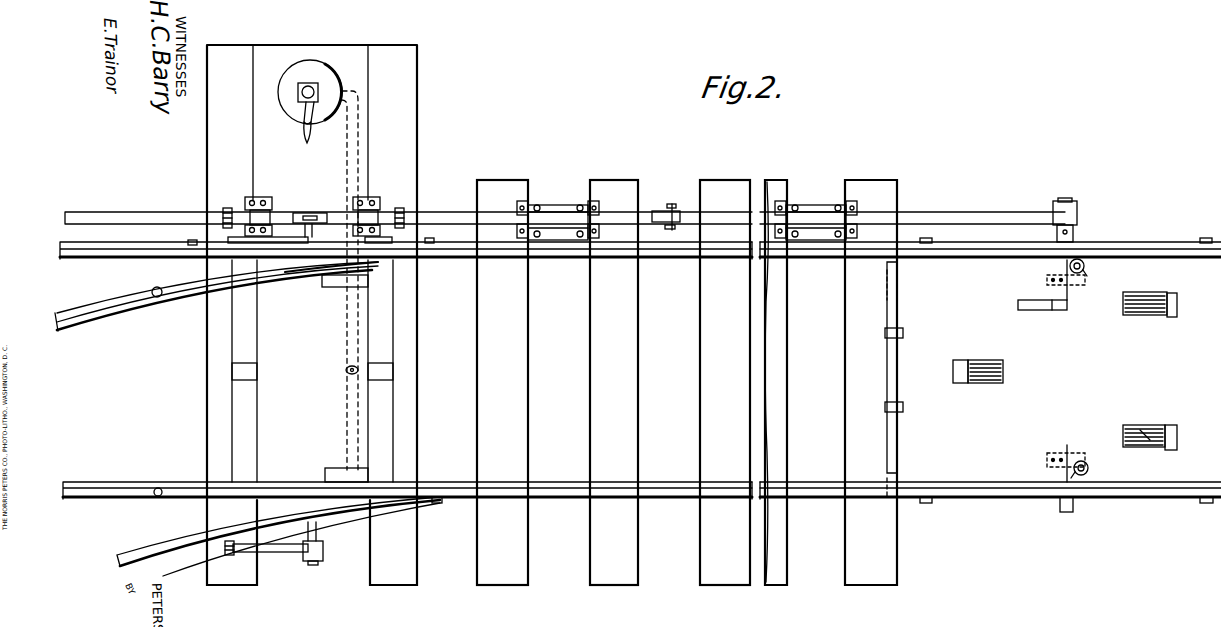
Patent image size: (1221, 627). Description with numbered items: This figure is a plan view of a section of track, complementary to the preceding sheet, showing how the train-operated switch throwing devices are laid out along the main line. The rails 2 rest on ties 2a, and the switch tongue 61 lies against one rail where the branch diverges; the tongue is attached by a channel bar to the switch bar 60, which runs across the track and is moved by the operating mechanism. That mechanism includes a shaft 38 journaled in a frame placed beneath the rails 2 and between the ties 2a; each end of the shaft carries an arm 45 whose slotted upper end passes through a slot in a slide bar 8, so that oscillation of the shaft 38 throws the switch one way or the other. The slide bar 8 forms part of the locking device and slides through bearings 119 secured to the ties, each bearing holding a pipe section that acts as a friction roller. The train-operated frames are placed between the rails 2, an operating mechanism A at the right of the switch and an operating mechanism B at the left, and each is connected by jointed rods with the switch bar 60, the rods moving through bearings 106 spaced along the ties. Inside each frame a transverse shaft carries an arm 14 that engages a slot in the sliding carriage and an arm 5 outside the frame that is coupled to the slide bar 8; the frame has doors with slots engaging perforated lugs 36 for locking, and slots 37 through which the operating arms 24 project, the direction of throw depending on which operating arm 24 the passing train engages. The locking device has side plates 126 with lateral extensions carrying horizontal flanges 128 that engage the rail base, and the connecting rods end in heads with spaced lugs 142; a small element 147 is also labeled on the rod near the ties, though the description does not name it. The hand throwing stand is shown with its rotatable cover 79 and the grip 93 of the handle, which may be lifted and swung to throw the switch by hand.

The rails 2 is at (1148, 250).
The ties 2a is at (710, 350).
The arm 5 is at (1078, 207).
The slide bar 8 is at (343, 221).
The arm 14 is at (1047, 306).
The operating arm 24 is at (1172, 316).
The perforated lug 36 is at (1062, 267).
The slot 37 is at (1142, 431).
The shaft 38 is at (312, 530).
The arm 45 is at (313, 207).
The switch bar 60 is at (359, 286).
The switch tongue 61 is at (291, 277).
The cover 79 is at (313, 75).
The grip 93 is at (305, 143).
The bearings 106 is at (548, 210).
The bearings 119 is at (264, 216).
The side plates 126 is at (438, 503).
The horizontal flanges 128 is at (430, 243).
The spaced lugs 142 is at (662, 233).
The pin 147 is at (672, 210).
The operating mechanism A is at (1019, 373).
The operating mechanism B is at (1027, 342).